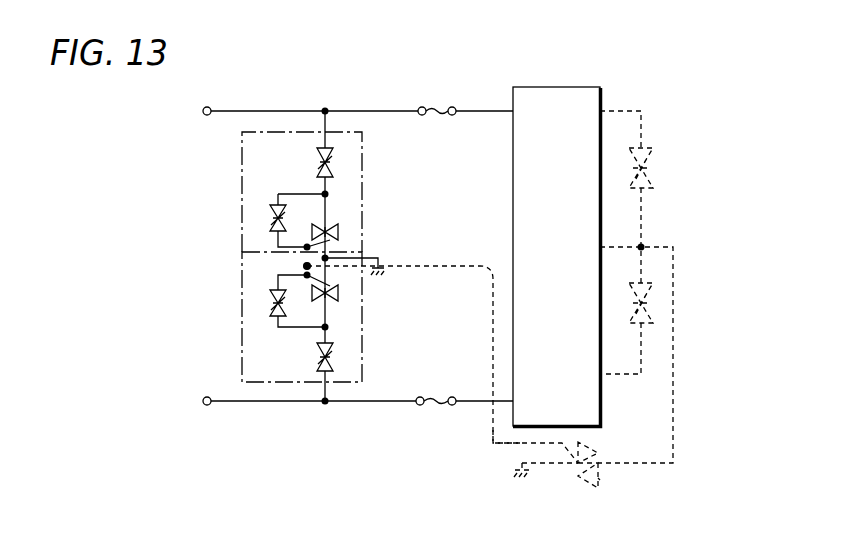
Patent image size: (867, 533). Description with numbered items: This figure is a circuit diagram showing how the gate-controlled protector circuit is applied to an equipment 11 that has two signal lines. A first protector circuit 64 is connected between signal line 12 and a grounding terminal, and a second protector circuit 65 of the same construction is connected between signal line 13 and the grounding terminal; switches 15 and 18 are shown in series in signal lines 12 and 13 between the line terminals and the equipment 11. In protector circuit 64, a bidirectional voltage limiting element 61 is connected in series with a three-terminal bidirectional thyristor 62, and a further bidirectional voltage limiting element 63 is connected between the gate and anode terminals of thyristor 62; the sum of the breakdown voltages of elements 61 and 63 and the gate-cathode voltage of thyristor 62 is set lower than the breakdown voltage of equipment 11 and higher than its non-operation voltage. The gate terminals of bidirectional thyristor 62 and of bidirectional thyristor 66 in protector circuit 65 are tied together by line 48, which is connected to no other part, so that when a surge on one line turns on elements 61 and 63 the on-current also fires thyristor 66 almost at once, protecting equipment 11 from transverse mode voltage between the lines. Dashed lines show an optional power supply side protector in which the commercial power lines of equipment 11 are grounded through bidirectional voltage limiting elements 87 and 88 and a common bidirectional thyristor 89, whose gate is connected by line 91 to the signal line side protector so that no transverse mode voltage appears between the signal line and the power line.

The equipment 11 is at (589, 85).
The signal line 12 is at (222, 108).
The signal line 13 is at (250, 404).
The first switch 15 is at (441, 107).
The second switch 18 is at (437, 405).
The line 48 is at (303, 260).
The bidirectional voltage limiting element 61 is at (336, 160).
The three-terminal bidirectional thyristor 62 is at (340, 230).
The bidirectional voltage limiting element 63 is at (268, 226).
The protector circuit 64 is at (242, 165).
The protector circuit 65 is at (242, 352).
The bidirectional thyristor 66 is at (340, 296).
The bidirectional voltage limiting element 87 is at (645, 158).
The bidirectional voltage limiting element 88 is at (645, 287).
The bidirectional thyristor 89 is at (600, 478).
The line 91 is at (491, 444).